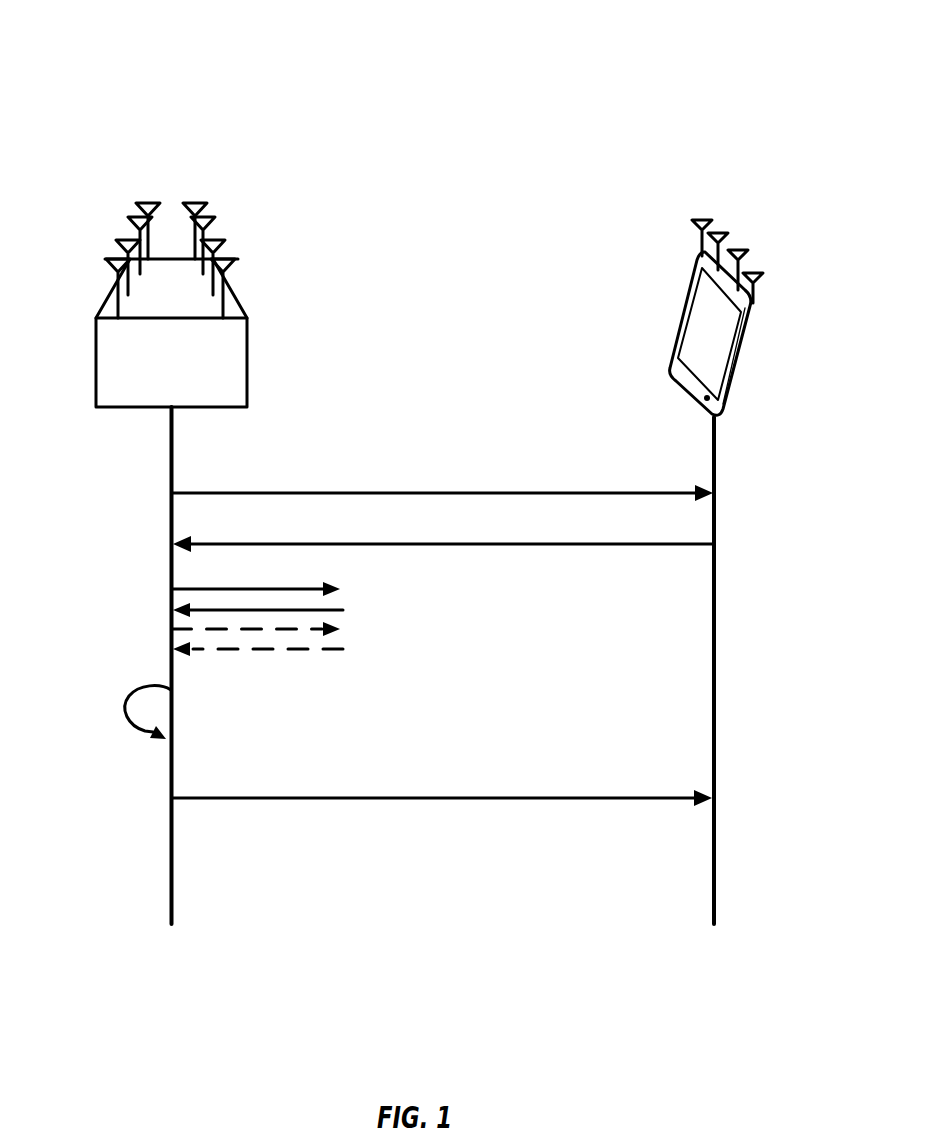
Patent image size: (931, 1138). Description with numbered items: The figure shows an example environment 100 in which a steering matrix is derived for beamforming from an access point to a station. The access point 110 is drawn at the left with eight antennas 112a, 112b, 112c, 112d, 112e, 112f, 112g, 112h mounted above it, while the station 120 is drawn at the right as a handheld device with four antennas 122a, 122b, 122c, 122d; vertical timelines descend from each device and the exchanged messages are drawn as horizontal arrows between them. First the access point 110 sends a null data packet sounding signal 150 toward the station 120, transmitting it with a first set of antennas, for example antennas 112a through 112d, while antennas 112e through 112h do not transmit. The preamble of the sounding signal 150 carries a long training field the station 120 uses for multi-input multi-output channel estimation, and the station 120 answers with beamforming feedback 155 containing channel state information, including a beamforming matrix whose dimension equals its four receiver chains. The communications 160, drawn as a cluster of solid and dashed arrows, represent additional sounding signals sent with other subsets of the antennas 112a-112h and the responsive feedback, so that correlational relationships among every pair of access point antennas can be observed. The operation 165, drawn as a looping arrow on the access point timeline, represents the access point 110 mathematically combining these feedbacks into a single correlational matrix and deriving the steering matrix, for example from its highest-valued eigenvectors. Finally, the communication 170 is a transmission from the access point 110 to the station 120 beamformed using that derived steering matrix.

The environment 100 is at (421, 68).
The access point 110 is at (137, 407).
The antenna 112a is at (140, 203).
The antenna 112b is at (132, 217).
The antenna 112c is at (122, 240).
The antenna 112d is at (114, 259).
The antenna 112e is at (203, 203).
The antenna 112f is at (212, 217).
The antenna 112g is at (223, 240).
The antenna 112h is at (231, 259).
The station 120 is at (693, 399).
The antenna 122a is at (709, 220).
The antenna 122b is at (725, 233).
The antenna 122c is at (745, 250).
The antenna 122d is at (760, 273).
The sounding signal 150 is at (467, 492).
The beamforming feedback 155 is at (622, 545).
The communications 160 is at (152, 621).
The operation 165 is at (125, 698).
The communication 170 is at (512, 798).